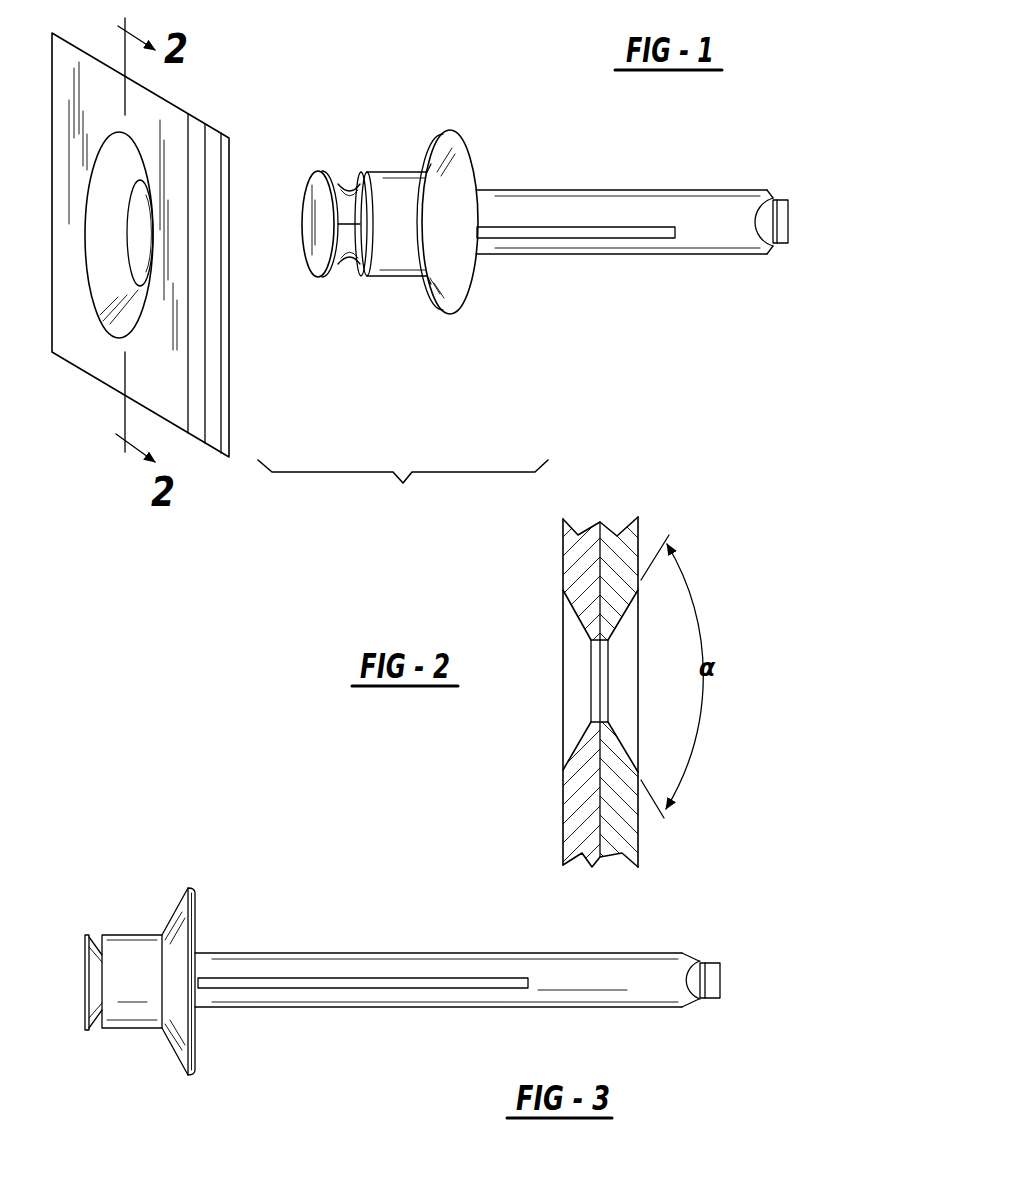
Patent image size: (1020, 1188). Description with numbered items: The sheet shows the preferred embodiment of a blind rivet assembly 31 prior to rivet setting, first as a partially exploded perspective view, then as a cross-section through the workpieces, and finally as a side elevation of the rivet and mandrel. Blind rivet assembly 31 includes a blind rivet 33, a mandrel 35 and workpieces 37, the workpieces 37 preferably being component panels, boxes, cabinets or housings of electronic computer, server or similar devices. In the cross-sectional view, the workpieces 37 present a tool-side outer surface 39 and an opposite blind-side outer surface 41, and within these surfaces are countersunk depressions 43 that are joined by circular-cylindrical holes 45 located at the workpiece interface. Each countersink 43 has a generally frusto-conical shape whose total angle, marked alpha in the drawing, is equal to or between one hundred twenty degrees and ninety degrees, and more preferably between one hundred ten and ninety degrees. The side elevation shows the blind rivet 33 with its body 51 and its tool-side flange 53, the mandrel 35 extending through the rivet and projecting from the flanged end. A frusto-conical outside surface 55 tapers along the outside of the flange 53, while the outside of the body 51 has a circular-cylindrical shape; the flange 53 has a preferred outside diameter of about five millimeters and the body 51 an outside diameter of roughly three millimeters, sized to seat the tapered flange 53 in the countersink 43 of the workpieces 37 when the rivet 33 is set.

In FIG. 1, the blind rivet assembly 31 is at (403, 486).
In FIG. 1, the blind rivet 33 is at (390, 150).
In FIG. 3, the blind rivet 33 is at (169, 959).
In FIG. 1, the mandrel 35 is at (613, 165).
In FIG. 3, the mandrel 35 is at (673, 910).
In FIG. 1, the workpieces 37 is at (234, 104).
In FIG. 2, the workpieces 37 is at (597, 687).
In FIG. 2, the tool-side outer surface 39 is at (638, 830).
In FIG. 2, the blind-side outer surface 41 is at (563, 828).
In FIG. 2, the countersunk depressions 43 is at (625, 745).
In FIG. 2, the circular-cylindrical holes 45 is at (594, 655).
In FIG. 3, the body 51 is at (125, 1010).
In FIG. 3, the tool-side flange 53 is at (201, 933).
In FIG. 3, the frusto-conical outside surface 55 is at (173, 913).